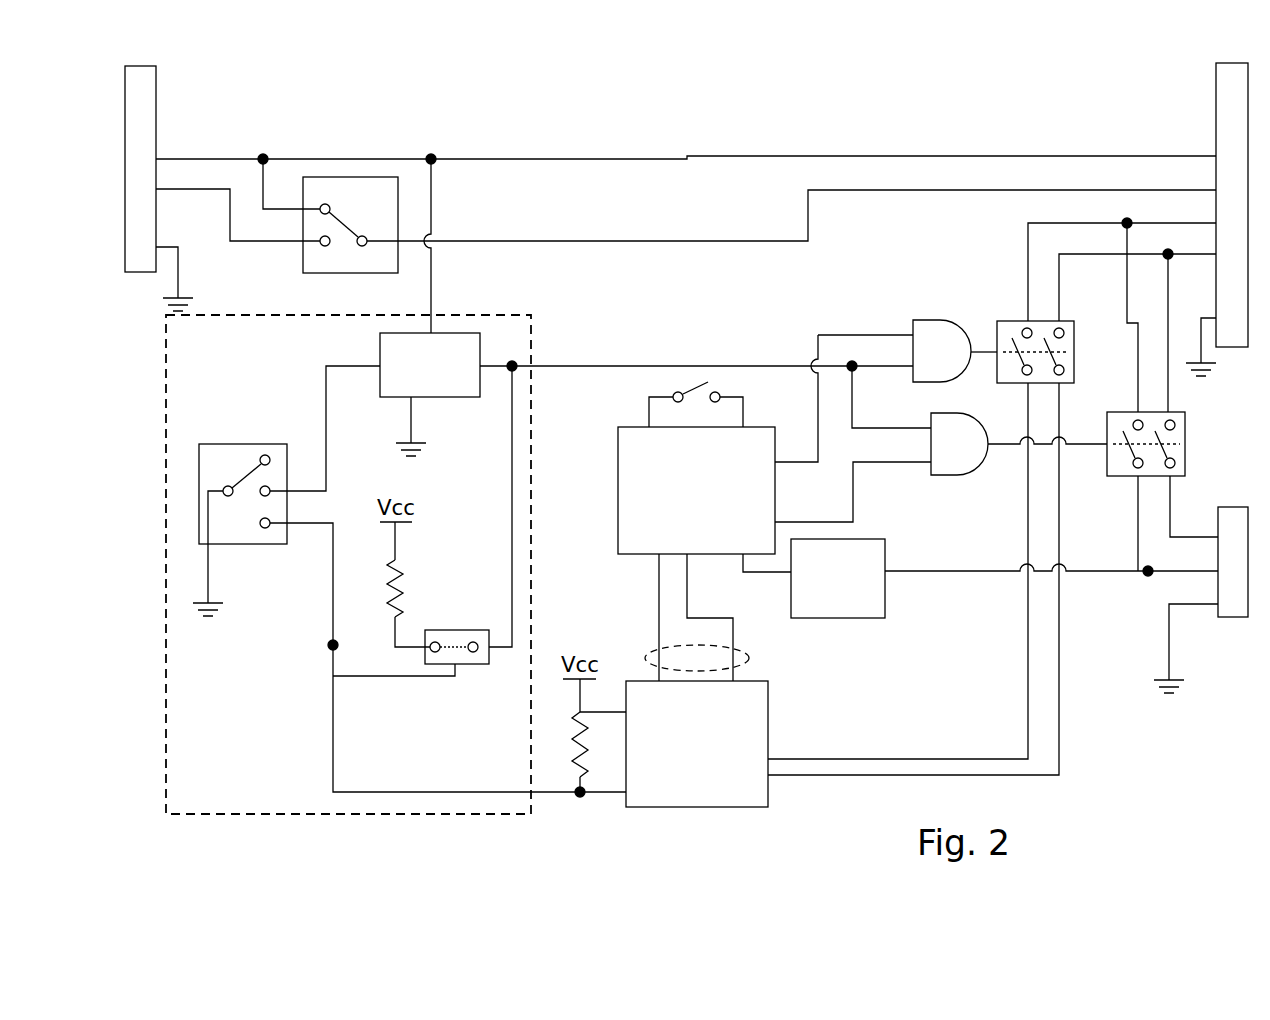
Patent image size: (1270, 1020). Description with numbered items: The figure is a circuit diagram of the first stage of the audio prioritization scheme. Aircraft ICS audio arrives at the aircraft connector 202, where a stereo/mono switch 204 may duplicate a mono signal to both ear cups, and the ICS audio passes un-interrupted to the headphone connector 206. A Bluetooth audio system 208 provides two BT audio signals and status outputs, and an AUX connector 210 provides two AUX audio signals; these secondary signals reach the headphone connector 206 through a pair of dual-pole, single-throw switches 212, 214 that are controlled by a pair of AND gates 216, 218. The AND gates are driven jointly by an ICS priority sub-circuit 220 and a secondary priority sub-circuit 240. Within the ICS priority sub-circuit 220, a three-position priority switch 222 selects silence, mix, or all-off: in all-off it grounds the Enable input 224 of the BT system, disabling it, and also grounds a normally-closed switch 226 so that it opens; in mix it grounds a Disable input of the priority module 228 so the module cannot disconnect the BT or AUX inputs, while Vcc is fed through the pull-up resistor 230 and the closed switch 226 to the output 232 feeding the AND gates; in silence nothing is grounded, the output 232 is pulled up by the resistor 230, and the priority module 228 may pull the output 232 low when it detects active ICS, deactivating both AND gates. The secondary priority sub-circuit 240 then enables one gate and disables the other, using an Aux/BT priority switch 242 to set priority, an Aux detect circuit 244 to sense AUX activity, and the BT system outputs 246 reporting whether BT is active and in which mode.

The aircraft connector 202 is at (199, 97).
The stereo/mono switch 204 is at (330, 255).
The headphone connector 206 is at (1216, 113).
The Bluetooth audio system 208 is at (768, 722).
The AUX connector 210 is at (1230, 617).
The dual-pole, single-throw switch 212 is at (1015, 321).
The dual-pole, single-throw switch 214 is at (1187, 465).
The AND gate 216 is at (925, 320).
The AND gate 218 is at (957, 477).
The ICS priority sub-circuit 220 is at (262, 814).
The priority switch 222 is at (252, 444).
The Enable input 224 is at (605, 792).
The normally-closed switch 226 is at (473, 615).
The priority module 228 is at (455, 397).
The pull-up resistor 230 is at (407, 585).
The output 232 is at (595, 364).
The secondary priority sub-circuit 240 is at (618, 468).
The Aux/BT priority switch 242 is at (720, 387).
The Aux detect circuit 244 is at (791, 595).
The BT system outputs 246 is at (735, 647).